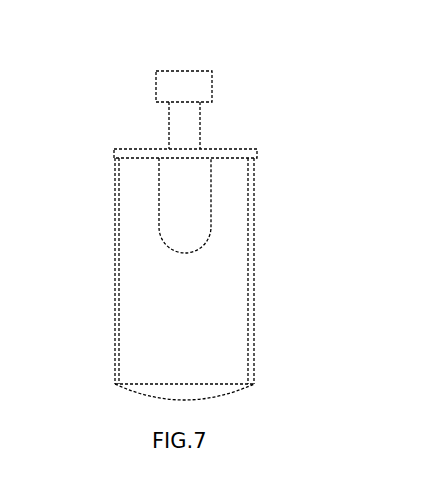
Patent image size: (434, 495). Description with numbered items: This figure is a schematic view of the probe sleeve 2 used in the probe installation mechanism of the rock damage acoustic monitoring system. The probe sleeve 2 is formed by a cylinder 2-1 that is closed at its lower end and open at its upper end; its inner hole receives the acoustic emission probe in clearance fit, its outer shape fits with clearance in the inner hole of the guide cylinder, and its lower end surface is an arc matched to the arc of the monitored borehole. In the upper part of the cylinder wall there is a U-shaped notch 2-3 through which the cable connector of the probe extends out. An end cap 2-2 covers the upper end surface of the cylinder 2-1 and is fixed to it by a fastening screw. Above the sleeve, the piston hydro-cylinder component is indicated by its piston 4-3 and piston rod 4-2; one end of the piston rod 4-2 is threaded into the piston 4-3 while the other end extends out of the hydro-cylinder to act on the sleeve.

The probe sleeve 2 is at (181, 201).
The cylinder 2-1 is at (117, 260).
The end cap 2-2 is at (136, 155).
The U-shaped notch 2-3 is at (211, 228).
The piston rod 4-2 is at (191, 129).
The piston 4-3 is at (173, 88).